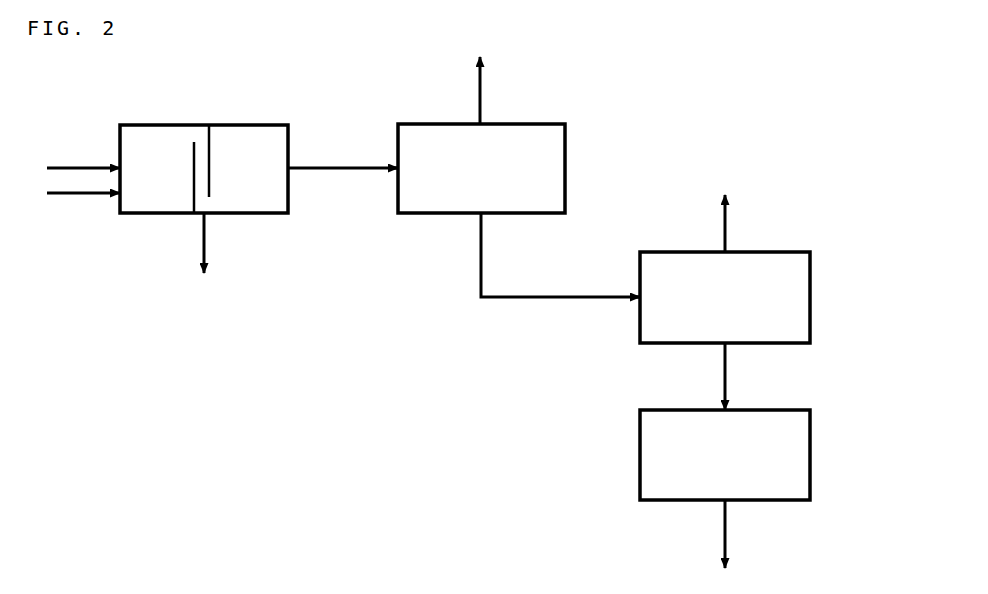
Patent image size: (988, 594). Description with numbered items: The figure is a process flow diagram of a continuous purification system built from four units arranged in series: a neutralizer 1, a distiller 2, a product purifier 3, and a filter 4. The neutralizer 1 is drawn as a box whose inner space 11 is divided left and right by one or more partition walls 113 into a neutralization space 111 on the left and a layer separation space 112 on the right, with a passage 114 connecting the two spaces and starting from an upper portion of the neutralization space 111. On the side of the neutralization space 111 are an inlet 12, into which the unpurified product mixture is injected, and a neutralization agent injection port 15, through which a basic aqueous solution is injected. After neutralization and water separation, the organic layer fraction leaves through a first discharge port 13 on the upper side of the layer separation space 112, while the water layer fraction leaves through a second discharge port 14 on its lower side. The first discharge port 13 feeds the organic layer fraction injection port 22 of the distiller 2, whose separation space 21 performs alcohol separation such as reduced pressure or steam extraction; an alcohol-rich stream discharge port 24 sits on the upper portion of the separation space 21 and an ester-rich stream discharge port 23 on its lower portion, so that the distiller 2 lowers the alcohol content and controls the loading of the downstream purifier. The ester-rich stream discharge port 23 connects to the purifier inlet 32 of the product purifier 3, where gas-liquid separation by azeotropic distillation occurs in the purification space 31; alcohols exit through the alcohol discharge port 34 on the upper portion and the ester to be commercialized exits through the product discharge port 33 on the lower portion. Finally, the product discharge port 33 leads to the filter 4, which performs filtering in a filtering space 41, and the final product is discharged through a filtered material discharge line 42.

The neutralizer 1 is at (203, 122).
The inner space 11 is at (157, 169).
The neutralization space 111 is at (147, 172).
The layer separation space 112 is at (248, 182).
The partition walls 113 is at (195, 143).
The passage 114 is at (222, 150).
The inlet 12 is at (83, 156).
The first discharge port 13 is at (343, 156).
The second discharge port 14 is at (220, 243).
The neutralization agent injection port 15 is at (83, 205).
The distiller 2 is at (572, 168).
The separation space 21 is at (481, 168).
The organic layer fraction injection port 22 is at (383, 184).
The ester-rich stream discharge port 23 is at (560, 255).
The alcohol-rich stream discharge port 24 is at (497, 90).
The product purifier 3 is at (812, 297).
The purification space 31 is at (725, 297).
The purifier inlet 32 is at (621, 310).
The product discharge port 33 is at (741, 376).
The alcohol discharge port 34 is at (741, 223).
The filter 4 is at (812, 455).
The filtering space 41 is at (725, 455).
The filtered material discharge line 42 is at (741, 534).